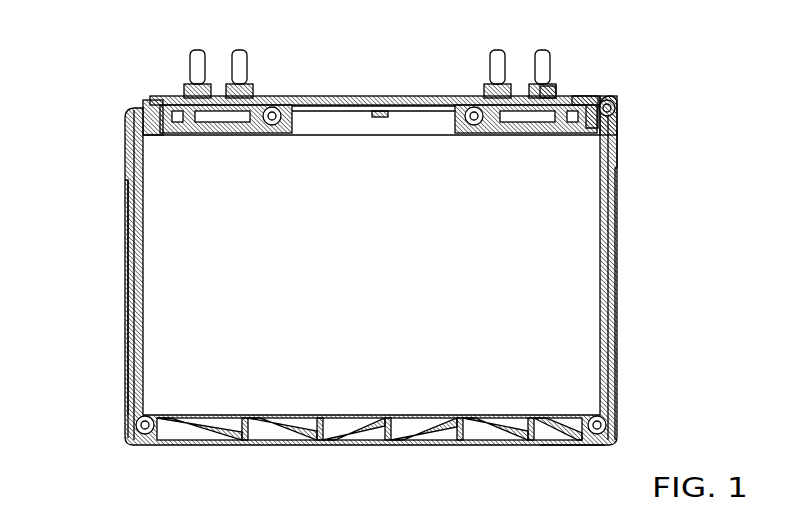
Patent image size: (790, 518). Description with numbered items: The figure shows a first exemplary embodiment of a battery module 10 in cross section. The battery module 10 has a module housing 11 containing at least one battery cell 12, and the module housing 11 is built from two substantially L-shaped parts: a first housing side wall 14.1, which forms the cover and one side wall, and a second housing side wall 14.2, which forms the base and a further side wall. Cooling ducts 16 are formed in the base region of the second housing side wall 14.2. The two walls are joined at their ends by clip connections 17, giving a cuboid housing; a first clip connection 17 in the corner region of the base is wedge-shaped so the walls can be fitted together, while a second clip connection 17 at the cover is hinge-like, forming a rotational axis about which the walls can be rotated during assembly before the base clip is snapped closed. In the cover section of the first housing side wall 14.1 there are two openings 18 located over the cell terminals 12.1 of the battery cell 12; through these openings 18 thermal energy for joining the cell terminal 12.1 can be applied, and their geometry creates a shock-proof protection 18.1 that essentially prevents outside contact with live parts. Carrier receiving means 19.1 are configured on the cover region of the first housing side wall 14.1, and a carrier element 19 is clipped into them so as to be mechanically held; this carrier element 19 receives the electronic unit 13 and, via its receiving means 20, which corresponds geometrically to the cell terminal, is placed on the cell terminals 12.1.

The battery module 10 is at (101, 155).
The module housing 11 is at (127, 293).
The battery cell 12 is at (578, 272).
The cell terminal 12.1 is at (163, 122).
The electronic unit 13 is at (418, 96).
The first housing side wall 14.1 is at (128, 263).
The second housing side wall 14.2 is at (620, 147).
The cooling ducts 16 is at (285, 449).
The clip connection 17 is at (160, 445).
The opening 18 is at (200, 97).
The shock-proof protection 18.1 is at (252, 82).
The carrier element 19 is at (380, 100).
The carrier receiving means 19.1 is at (274, 95).
The receiving means 20 is at (557, 95).